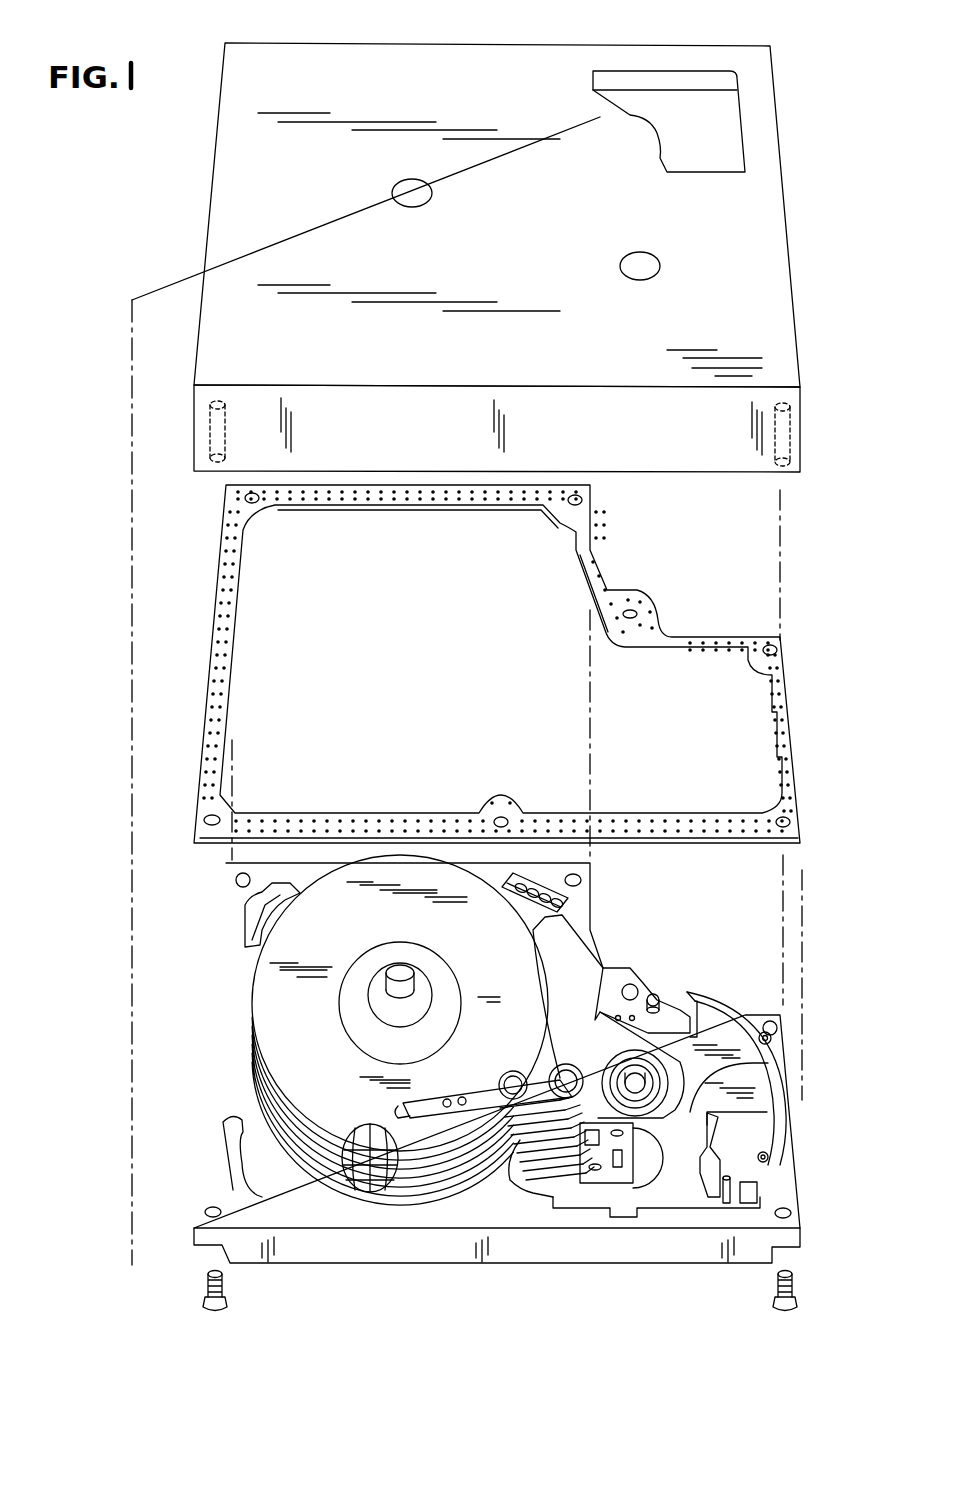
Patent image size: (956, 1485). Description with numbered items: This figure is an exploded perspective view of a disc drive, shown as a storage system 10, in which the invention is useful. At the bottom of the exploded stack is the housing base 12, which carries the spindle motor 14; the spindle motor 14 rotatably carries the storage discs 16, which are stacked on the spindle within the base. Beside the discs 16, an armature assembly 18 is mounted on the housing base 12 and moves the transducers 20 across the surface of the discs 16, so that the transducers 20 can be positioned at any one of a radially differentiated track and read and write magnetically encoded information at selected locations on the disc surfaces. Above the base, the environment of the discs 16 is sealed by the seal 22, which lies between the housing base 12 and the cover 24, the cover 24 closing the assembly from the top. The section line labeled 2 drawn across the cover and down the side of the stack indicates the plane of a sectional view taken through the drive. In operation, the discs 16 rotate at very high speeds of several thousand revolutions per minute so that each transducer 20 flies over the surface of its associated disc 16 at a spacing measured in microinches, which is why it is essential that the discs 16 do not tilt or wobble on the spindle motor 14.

The section line 2- 2 is at (580, 126).
The storage system 10 is at (775, 44).
The housing base 12 is at (803, 1225).
The spindle motor 14 is at (378, 1008).
The storage discs 16 is at (375, 1138).
The armature assembly 18 is at (543, 1193).
The transducers 20 is at (412, 1110).
The seal 22 is at (786, 797).
The cover 24 is at (793, 248).